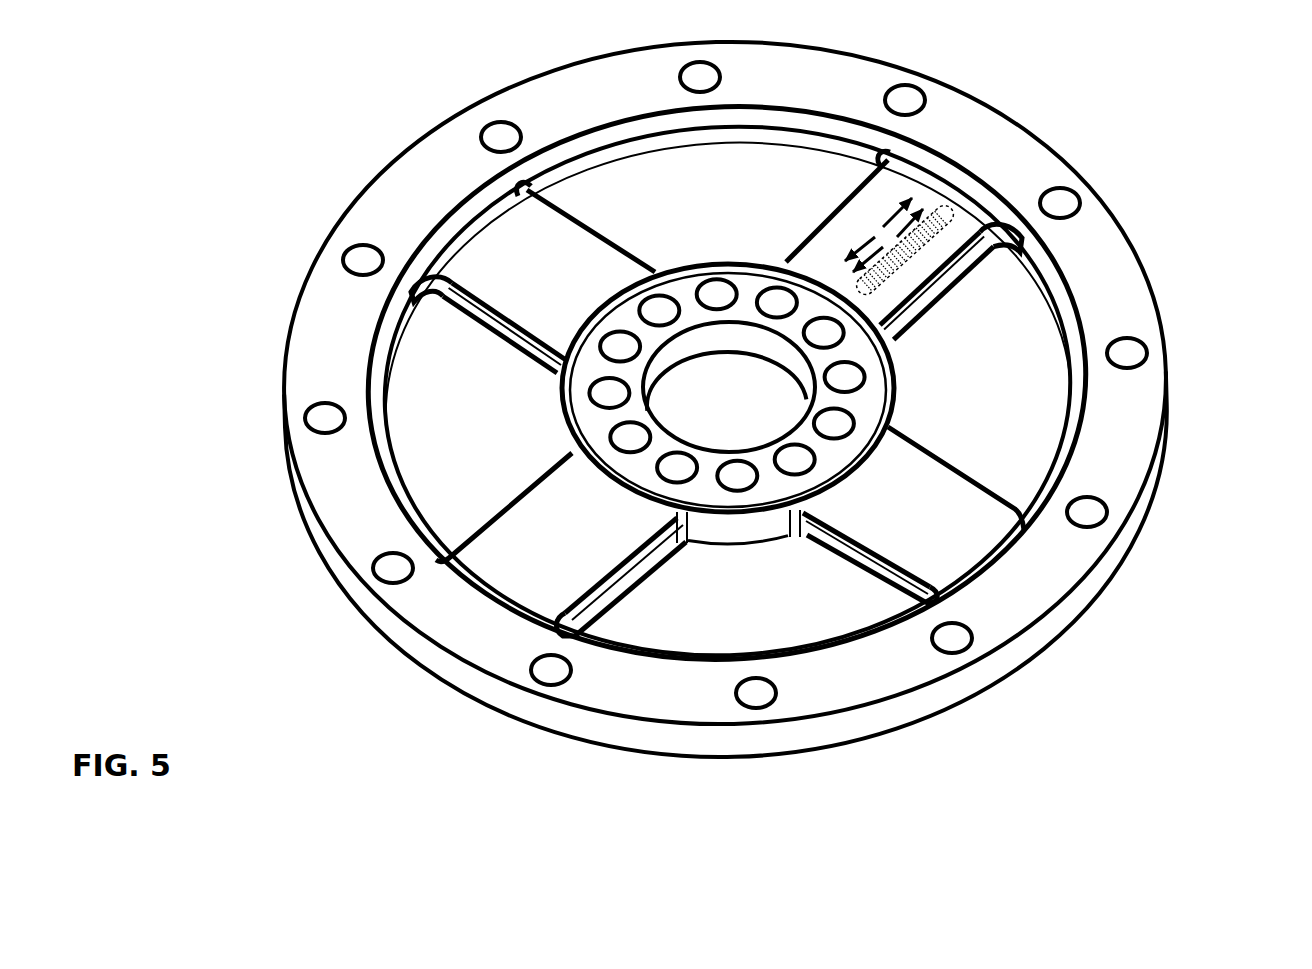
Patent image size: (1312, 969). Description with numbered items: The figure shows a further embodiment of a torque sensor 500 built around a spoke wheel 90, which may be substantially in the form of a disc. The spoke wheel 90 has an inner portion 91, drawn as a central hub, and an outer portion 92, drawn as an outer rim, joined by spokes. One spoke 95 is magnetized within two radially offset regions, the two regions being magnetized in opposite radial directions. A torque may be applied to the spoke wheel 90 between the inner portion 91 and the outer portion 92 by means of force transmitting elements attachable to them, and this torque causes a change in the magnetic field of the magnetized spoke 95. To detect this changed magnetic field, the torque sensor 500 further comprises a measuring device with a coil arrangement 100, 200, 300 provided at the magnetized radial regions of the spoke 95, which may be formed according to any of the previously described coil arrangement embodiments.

The spoke wheel 90 is at (268, 347).
The inner portion 91 is at (768, 488).
The outer portion 92 is at (1112, 273).
The spoke 95 is at (862, 213).
The torque sensor 500 is at (742, 217).
The coil arrangement 100 is at (925, 270).
The coil arrangement 200 is at (1073, 417).
The coil arrangement 300 is at (1069, 417).